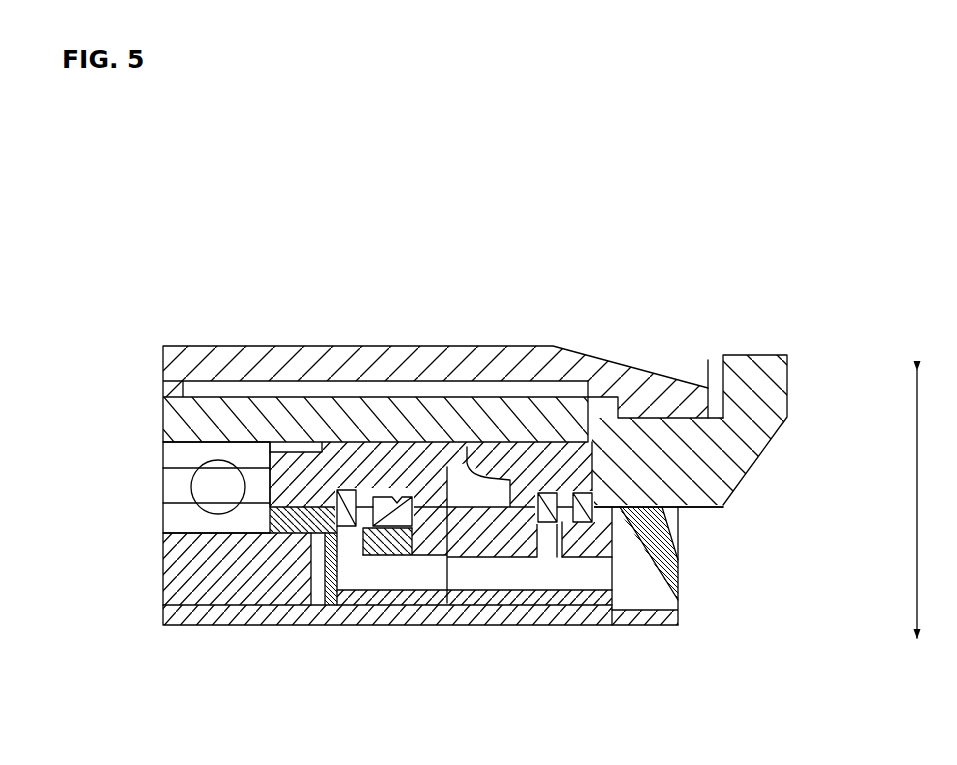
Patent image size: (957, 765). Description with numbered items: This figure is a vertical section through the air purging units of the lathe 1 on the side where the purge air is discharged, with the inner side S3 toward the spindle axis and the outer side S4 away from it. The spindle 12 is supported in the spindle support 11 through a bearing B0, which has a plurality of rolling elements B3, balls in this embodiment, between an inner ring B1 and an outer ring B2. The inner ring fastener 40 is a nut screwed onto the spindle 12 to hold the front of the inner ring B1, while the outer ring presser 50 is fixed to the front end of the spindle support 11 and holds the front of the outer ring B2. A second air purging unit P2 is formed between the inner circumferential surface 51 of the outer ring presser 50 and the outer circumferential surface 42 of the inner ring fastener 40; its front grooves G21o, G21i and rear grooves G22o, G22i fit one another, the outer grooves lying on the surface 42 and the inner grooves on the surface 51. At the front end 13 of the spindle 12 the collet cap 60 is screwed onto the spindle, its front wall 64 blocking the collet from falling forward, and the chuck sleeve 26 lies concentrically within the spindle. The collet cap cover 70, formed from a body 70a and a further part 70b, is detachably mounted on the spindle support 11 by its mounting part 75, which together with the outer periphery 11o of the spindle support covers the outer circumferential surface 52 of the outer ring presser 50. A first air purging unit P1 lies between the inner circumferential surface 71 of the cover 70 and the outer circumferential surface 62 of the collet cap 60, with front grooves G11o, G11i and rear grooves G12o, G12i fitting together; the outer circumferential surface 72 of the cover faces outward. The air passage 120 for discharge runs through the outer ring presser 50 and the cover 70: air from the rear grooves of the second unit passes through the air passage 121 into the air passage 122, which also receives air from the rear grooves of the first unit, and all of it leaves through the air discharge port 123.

The lathe 1 is at (116, 199).
The spindle support 11 is at (163, 566).
The outer periphery of the front end of the spindle support 11o is at (268, 605).
The spindle 12 is at (162, 415).
The front end of the spindle 13 is at (617, 358).
The chuck sleeve 26 is at (673, 382).
The inner ring fastener 40 is at (298, 463).
The outer circumferential surface of the inner ring fastener 42 is at (280, 450).
The outer ring presser 50 is at (300, 607).
The inner circumferential surface of the outer ring presser 51 is at (278, 531).
The outer circumferential surface of the outer ring presser 52 is at (420, 607).
The collet cap 60 is at (787, 358).
The outer circumferential surface of the collet cap 62 is at (718, 507).
The front wall of the collet cap 64 is at (708, 360).
The collet cap cover 70 is at (645, 612).
The body of the collet cap cover 70a is at (642, 628).
The part of the collet cap cover 70b is at (661, 541).
The inner circumferential surface of the collet cap cover 71 is at (625, 512).
The outer circumferential surface of the collet cap cover 72 is at (613, 612).
The mounting part of the collet cap cover 75 is at (195, 616).
The air passage for discharging air 120 is at (683, 604).
The air passage of the outer ring presser 121 is at (377, 578).
The air passage of the collet cap cover 122 is at (490, 577).
The air discharge port 123 is at (670, 611).
The bearing B0 is at (95, 438).
The inner ring B1 is at (163, 459).
The outer ring B2 is at (163, 517).
The rolling elements B3 is at (208, 488).
The first air purging unit P1 is at (567, 505).
The second air purging unit P2 is at (362, 507).
The outer circumferential groove G11o is at (582, 495).
The inner circumferential groove G11i is at (576, 524).
The outer circumferential groove G12o is at (545, 493).
The inner circumferential groove G12i is at (540, 525).
The outer circumferential groove G21o is at (388, 495).
The inner circumferential groove G21i is at (380, 527).
The outer circumferential groove G22o is at (343, 492).
The inner circumferential groove G22i is at (345, 527).
The inner side S3 is at (917, 489).
The outer side S4 is at (917, 582).